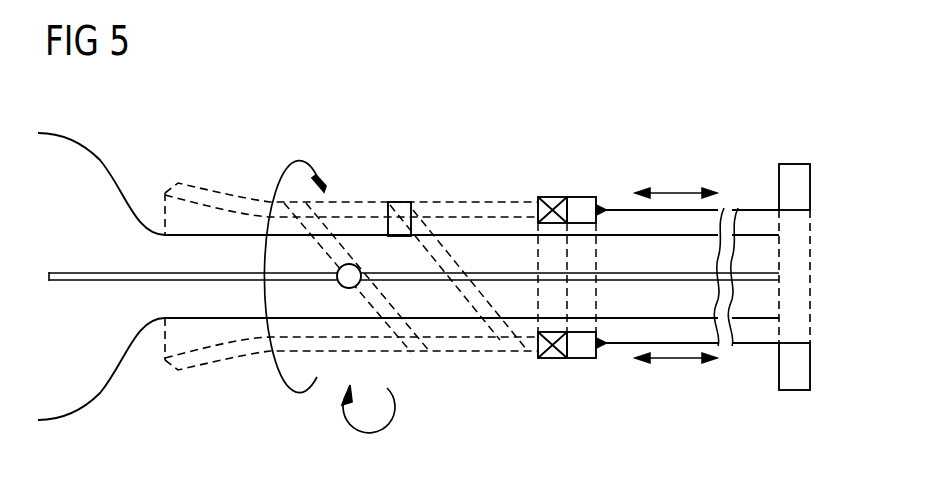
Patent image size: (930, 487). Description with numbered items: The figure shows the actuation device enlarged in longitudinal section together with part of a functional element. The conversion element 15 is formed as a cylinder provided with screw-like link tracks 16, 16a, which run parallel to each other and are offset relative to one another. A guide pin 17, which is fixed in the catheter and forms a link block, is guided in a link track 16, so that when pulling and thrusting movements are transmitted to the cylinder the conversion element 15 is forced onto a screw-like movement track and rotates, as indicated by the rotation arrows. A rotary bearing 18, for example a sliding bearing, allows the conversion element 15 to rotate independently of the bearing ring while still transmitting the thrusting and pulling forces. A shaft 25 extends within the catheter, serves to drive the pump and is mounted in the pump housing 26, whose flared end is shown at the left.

The conversion element 15 is at (470, 201).
The link track 16 is at (440, 253).
The link track 16a is at (363, 309).
The guide pin 17 is at (400, 200).
The rotary bearing 18 is at (356, 284).
The shaft 25 is at (73, 275).
The pump housing 26 is at (97, 151).